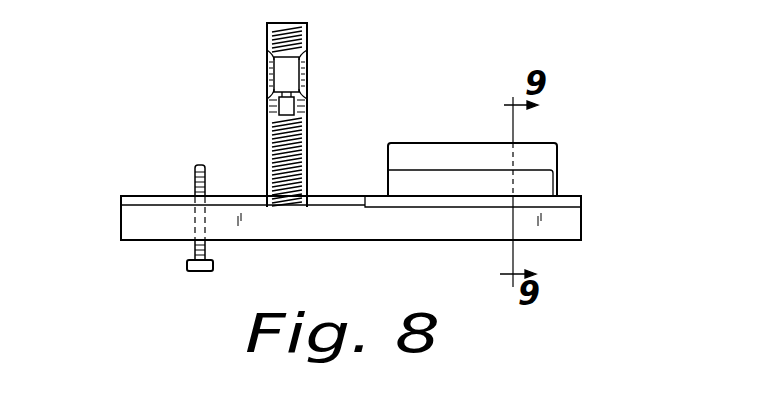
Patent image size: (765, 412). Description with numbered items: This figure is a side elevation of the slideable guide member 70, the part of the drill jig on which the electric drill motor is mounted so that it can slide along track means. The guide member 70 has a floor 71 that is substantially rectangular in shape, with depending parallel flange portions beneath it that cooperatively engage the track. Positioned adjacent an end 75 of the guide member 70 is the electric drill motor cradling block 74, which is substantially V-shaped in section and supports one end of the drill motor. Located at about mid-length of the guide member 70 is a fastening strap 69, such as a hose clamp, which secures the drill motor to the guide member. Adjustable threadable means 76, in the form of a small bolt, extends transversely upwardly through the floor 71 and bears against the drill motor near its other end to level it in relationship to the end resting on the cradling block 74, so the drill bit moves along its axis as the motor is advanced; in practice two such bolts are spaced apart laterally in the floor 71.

The fastening strap 69 is at (285, 53).
The slideable guide member 70 is at (598, 217).
The floor 71 is at (145, 200).
The electric drill motor cradling block 74 is at (550, 154).
The end of the guide member 75 is at (560, 226).
The adjustable threadable means 76 is at (199, 165).